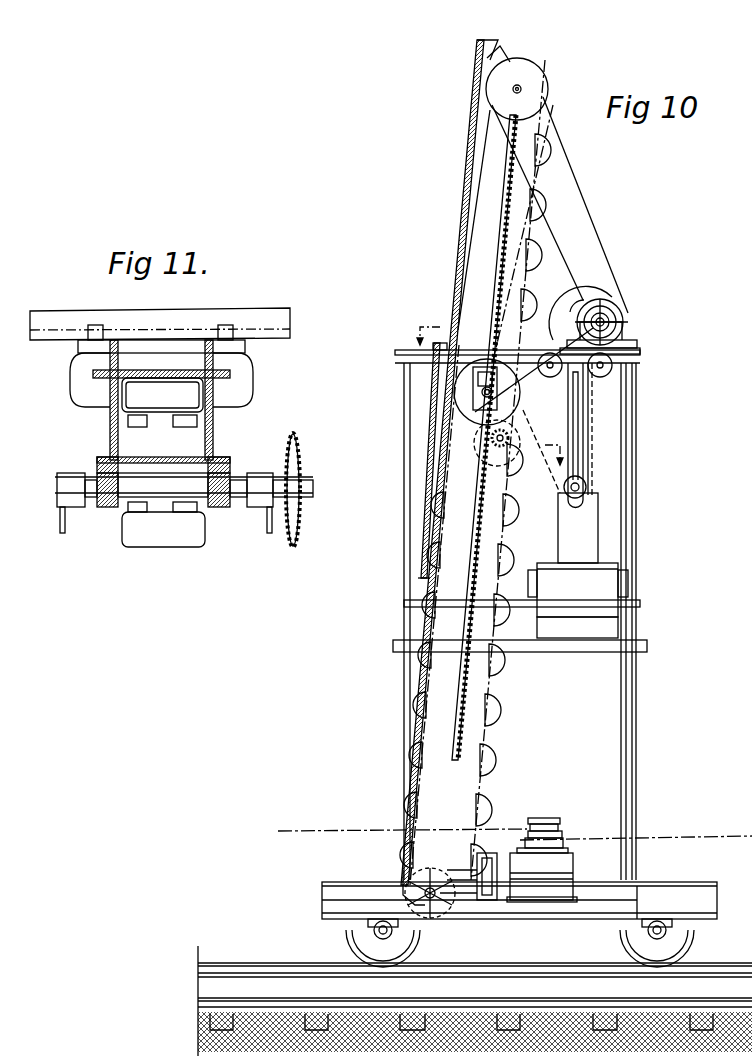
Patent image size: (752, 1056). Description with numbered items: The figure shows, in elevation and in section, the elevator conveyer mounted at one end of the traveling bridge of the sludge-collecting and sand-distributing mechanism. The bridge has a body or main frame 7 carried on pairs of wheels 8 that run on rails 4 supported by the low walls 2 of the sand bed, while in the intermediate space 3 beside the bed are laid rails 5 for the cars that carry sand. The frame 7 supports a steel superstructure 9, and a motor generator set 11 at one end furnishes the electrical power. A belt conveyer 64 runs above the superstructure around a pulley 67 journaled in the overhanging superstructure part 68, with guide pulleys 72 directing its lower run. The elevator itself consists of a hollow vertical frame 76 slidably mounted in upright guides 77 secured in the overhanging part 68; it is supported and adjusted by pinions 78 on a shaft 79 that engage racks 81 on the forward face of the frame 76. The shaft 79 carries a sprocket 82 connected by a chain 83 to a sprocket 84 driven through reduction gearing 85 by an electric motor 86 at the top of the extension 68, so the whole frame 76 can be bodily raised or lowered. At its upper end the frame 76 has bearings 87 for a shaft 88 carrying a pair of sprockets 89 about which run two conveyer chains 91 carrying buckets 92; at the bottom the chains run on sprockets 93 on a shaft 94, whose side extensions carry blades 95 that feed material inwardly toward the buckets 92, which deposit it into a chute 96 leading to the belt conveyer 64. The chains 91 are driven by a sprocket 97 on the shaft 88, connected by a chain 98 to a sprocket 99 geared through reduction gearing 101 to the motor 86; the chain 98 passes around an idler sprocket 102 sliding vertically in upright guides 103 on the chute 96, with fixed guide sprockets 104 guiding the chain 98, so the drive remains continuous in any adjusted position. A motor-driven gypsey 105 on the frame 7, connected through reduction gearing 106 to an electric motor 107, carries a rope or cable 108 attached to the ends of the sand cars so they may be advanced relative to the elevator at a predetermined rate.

In FIG. 10, the low walls 2 is at (486, 1004).
In FIG. 10, the intermediate space 3 is at (380, 1051).
In FIG. 10, the rails 4 is at (305, 962).
In FIG. 10, the rails 5 is at (660, 1003).
In FIG. 10, the main frame 7 is at (706, 895).
In FIG. 10, the wheels 8 is at (404, 951).
In FIG. 10, the superstructure 9 is at (400, 743).
In FIG. 10, the motor generator set 11 is at (487, 386).
In FIG. 10, the belt conveyer 64 is at (610, 566).
In FIG. 10, the pulley 67 is at (630, 587).
In FIG. 10, the overhanging superstructure part 68 is at (435, 350).
In FIG. 11, the overhanging superstructure part 68 is at (120, 310).
In FIG. 10, the guide pulleys 72 is at (612, 632).
In FIG. 10, the hollow vertical frame 76 is at (483, 207).
In FIG. 11, the hollow vertical frame 76 is at (215, 430).
In FIG. 10, the upright guides 77 is at (437, 392).
In FIG. 11, the upright guides 77 is at (245, 378).
In FIG. 10, the pinions 78 is at (508, 436).
In FIG. 11, the pinions 78 is at (108, 510).
In FIG. 11, the shaft 79 is at (167, 497).
In FIG. 11, the racks 81 is at (100, 465).
In FIG. 11, the sprocket 82 is at (292, 548).
In FIG. 10, the chain 83 is at (584, 413).
In FIG. 10, the sprocket 84 is at (580, 300).
In FIG. 10, the reduction gearing 85 is at (588, 300).
In FIG. 10, the electric motor 86 is at (603, 300).
In FIG. 10, the bearings 87 is at (458, 402).
In FIG. 10, the shaft 88 is at (521, 87).
In FIG. 10, the sprockets 89 is at (492, 360).
In FIG. 10, the conveyer chains 91 is at (487, 545).
In FIG. 11, the conveyer chains 91 is at (135, 428).
In FIG. 10, the buckets 92 is at (538, 252).
In FIG. 11, the buckets 92 is at (148, 385).
In FIG. 10, the sprockets 93 is at (440, 907).
In FIG. 10, the shaft 94 is at (447, 897).
In FIG. 10, the blades 95 is at (432, 907).
In FIG. 10, the chute 96 is at (582, 535).
In FIG. 10, the sprocket 97 is at (488, 88).
In FIG. 10, the chain 98 is at (588, 197).
In FIG. 10, the sprocket 99 is at (624, 320).
In FIG. 10, the reduction gearing 101 is at (641, 348).
In FIG. 10, the idler sprocket 102 is at (590, 400).
In FIG. 10, the upright guides 103 is at (580, 440).
In FIG. 10, the guide sprockets 104 is at (614, 367).
In FIG. 10, the gypsey 105 is at (545, 818).
In FIG. 10, the reduction gearing 106 is at (574, 860).
In FIG. 10, the electric motor 107 is at (486, 856).
In FIG. 10, the rope or cable 108 is at (683, 836).